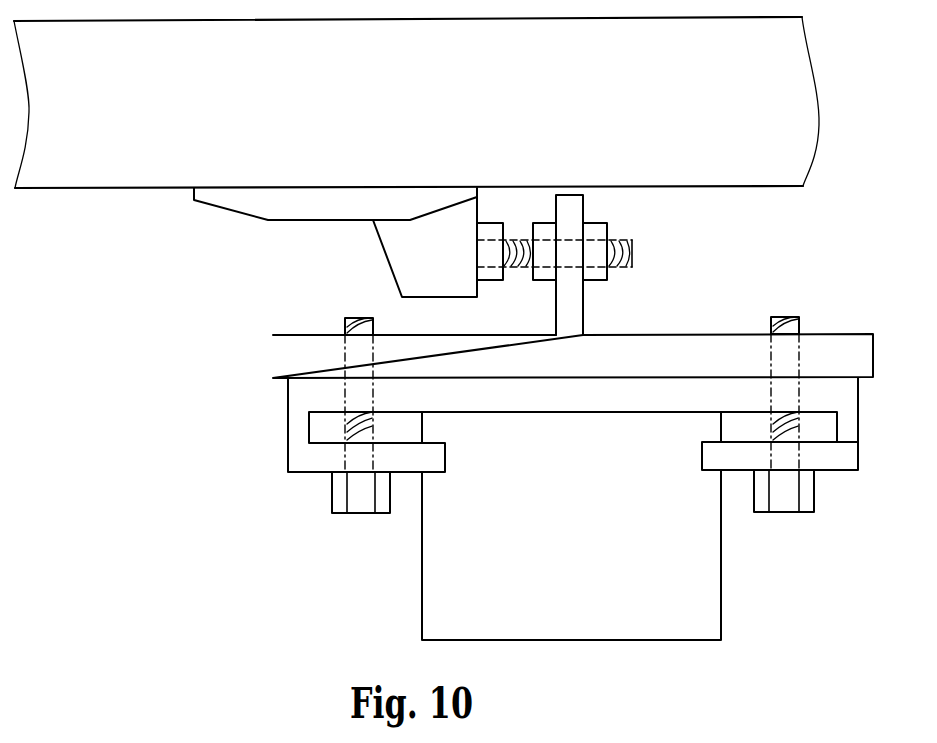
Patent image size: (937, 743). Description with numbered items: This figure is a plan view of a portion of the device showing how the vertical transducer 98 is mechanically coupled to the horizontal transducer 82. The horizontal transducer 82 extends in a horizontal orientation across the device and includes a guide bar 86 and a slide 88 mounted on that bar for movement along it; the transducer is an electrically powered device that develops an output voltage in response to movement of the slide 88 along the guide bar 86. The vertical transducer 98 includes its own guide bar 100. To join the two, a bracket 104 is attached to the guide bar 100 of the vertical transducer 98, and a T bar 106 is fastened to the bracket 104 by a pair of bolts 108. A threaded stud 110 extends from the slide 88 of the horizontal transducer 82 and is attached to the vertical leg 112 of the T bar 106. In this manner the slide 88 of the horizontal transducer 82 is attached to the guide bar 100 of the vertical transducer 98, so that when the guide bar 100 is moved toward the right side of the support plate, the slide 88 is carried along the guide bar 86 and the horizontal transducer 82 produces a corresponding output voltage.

The horizontal transducer 82 is at (114, 204).
The guide bar 86 is at (83, 172).
The slide 88 is at (240, 202).
The vertical transducer 98 is at (498, 526).
The guide bar 100 is at (435, 610).
The bracket 104 is at (297, 443).
The T bar 106 is at (860, 328).
The bolts 108 is at (340, 503).
The threaded stud 110 is at (632, 248).
The vertical leg 112 is at (575, 315).